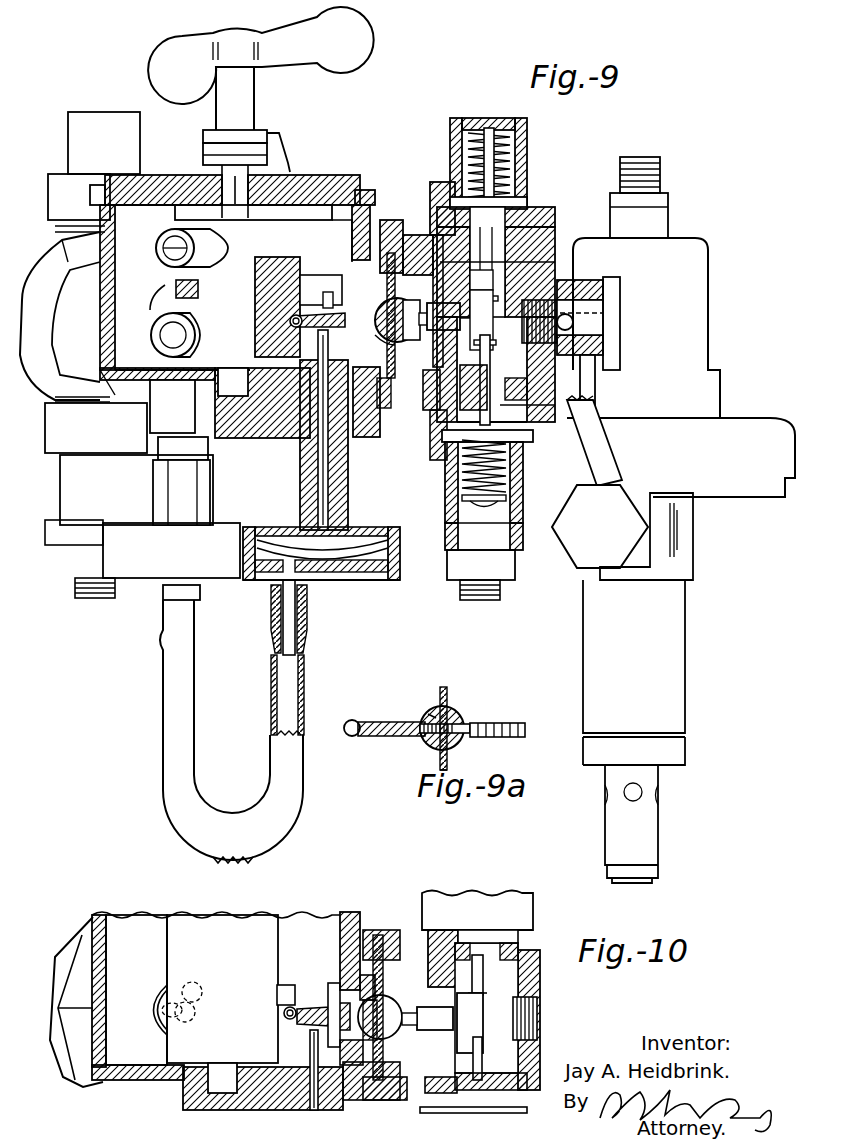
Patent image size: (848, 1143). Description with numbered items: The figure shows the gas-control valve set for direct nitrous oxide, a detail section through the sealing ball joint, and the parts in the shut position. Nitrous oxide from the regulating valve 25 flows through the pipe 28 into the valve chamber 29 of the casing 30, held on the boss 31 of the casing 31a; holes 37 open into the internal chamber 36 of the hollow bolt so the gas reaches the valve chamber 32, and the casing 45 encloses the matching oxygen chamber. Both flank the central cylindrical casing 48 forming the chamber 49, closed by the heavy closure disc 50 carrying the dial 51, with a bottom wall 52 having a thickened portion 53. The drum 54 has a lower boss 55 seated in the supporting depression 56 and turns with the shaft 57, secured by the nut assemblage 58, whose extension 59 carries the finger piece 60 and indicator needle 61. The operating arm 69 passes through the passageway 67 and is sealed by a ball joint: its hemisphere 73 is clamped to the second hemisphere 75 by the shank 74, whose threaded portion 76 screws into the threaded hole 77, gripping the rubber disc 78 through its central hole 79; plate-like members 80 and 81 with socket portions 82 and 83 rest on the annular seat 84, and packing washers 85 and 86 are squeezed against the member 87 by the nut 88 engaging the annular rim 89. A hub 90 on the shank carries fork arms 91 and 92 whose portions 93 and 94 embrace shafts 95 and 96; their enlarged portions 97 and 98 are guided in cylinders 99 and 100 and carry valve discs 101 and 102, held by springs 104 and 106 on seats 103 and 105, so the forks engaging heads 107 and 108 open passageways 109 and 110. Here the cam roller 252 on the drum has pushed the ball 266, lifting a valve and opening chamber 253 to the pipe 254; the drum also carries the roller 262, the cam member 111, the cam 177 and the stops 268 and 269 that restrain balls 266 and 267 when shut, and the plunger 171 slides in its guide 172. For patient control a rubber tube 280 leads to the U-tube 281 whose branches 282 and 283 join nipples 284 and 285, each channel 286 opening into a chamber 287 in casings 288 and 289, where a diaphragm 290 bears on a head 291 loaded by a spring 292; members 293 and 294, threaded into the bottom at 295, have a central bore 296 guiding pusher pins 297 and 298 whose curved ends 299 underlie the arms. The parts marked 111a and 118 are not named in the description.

In FIG. 9, the regulating valve 25 is at (748, 450).
In FIG. 9, the pipe 28 is at (607, 457).
In FIG. 9, the valve chamber 29 is at (605, 300).
In FIG. 9, the casing 30 is at (595, 285).
In FIG. 9, the boss 31 is at (537, 277).
In FIG. 10, the boss 31 is at (540, 1063).
In FIG. 9, the casing 31a is at (450, 238).
In FIG. 10, the casing 31a is at (503, 973).
In FIG. 9, the valve chamber 32 is at (435, 245).
In FIG. 10, the valve chamber 32 is at (435, 977).
In FIG. 9, the internal chamber 36 is at (582, 395).
In FIG. 9, the holes 37 is at (600, 318).
In FIG. 9, the casing 45 is at (110, 390).
In FIG. 9, the cylindrical casing 48 is at (100, 370).
In FIG. 10, the cylindrical casing 48 is at (98, 917).
In FIG. 9, the chamber 49 is at (125, 240).
In FIG. 10, the chamber 49 is at (140, 923).
In FIG. 9, the closure disc 50 is at (118, 185).
In FIG. 9, the dial 51 is at (312, 215).
In FIG. 9, the bottom wall 52 is at (200, 417).
In FIG. 9, the thickened portion 53 is at (200, 425).
In FIG. 9, the drum 54 is at (263, 233).
In FIG. 10, the drum 54 is at (222, 925).
In FIG. 9, the lower boss 55 is at (213, 413).
In FIG. 10, the lower boss 55 is at (217, 1093).
In FIG. 10, the supporting depression 56 is at (200, 1087).
In FIG. 9, the shaft 57 is at (228, 178).
In FIG. 9, the nut assemblage 58 is at (205, 138).
In FIG. 9, the extension 59 is at (250, 97).
In FIG. 9, the operating finger piece 60 is at (362, 34).
In FIG. 9, the indicator needle 61 is at (282, 143).
In FIG. 9, the passageway 67 is at (350, 300).
In FIG. 9, the operating arm 69 is at (345, 318).
In FIG. 9A, the operating arm 69 is at (383, 722).
In FIG. 10, the operating arm 69 is at (317, 1003).
In FIG. 9, the hemisphere 73 is at (365, 292).
In FIG. 9A, the hemisphere 73 is at (423, 743).
In FIG. 9, the shank 74 is at (422, 313).
In FIG. 9A, the shank 74 is at (477, 721).
In FIG. 10, the shank 74 is at (408, 1011).
In FIG. 9, the second hemisphere 75 is at (412, 335).
In FIG. 9A, the second hemisphere 75 is at (460, 720).
In FIG. 9A, the threaded extended portion 76 is at (438, 757).
In FIG. 9A, the threaded hole 77 is at (430, 716).
In FIG. 9, the flexible rubber disc 78 is at (386, 290).
In FIG. 9A, the flexible rubber disc 78 is at (445, 687).
In FIG. 10, the flexible rubber disc 78 is at (381, 935).
In FIG. 9A, the central hole 79 is at (452, 690).
In FIG. 9, the plate-like member 80 is at (407, 300).
In FIG. 10, the plate-like member 80 is at (388, 940).
In FIG. 9, the plate-like member 81 is at (384, 300).
In FIG. 10, the plate-like member 81 is at (375, 935).
In FIG. 9, the socket portion 82 is at (398, 342).
In FIG. 10, the socket portion 82 is at (383, 1042).
In FIG. 9, the socket portion 83 is at (324, 345).
In FIG. 10, the socket portion 83 is at (408, 1032).
In FIG. 9, the annular seat 84 is at (432, 225).
In FIG. 10, the annular seat 84 is at (430, 935).
In FIG. 9, the packing washer 85 is at (437, 423).
In FIG. 10, the packing washer 85 is at (398, 940).
In FIG. 9, the packing washer 86 is at (378, 395).
In FIG. 10, the packing washer 86 is at (367, 937).
In FIG. 9, the member 87 is at (405, 240).
In FIG. 9, the nut 88 is at (100, 275).
In FIG. 10, the nut 88 is at (73, 1032).
In FIG. 9, the annular rim 89 is at (400, 400).
In FIG. 10, the annular rim 89 is at (437, 1095).
In FIG. 9, the hub 90 is at (445, 328).
In FIG. 10, the hub 90 is at (433, 1010).
In FIG. 9, the fork arm 91 is at (462, 340).
In FIG. 9, the fork arm 92 is at (472, 288).
In FIG. 10, the fork arm 92 is at (480, 950).
In FIG. 9, the fork portion 93 is at (472, 300).
In FIG. 10, the fork portion 93 is at (484, 997).
In FIG. 9, the fork portion 94 is at (496, 343).
In FIG. 9, the shaft 95 is at (486, 285).
In FIG. 10, the shaft 95 is at (483, 988).
In FIG. 9, the shaft 96 is at (490, 360).
In FIG. 10, the shaft 96 is at (484, 1050).
In FIG. 9, the enlarged portion 97 is at (510, 230).
In FIG. 10, the enlarged portion 97 is at (485, 957).
In FIG. 9, the enlarged portion 98 is at (520, 400).
In FIG. 10, the enlarged portion 98 is at (483, 1090).
In FIG. 9, the cylinder 99 is at (505, 262).
In FIG. 10, the cylinder 99 is at (527, 952).
In FIG. 9, the cylinder 100 is at (520, 387).
In FIG. 10, the cylinder 100 is at (500, 1068).
In FIG. 9, the valve disc 101 is at (500, 214).
In FIG. 9, the valve disc 102 is at (503, 420).
In FIG. 9, the valve seat 103 is at (518, 185).
In FIG. 9, the spring 104 is at (508, 143).
In FIG. 9, the valve seat 105 is at (437, 433).
In FIG. 9, the spring 106 is at (508, 487).
In FIG. 9, the head 107 is at (522, 316).
In FIG. 10, the head 107 is at (537, 1005).
In FIG. 9, the head 108 is at (522, 326).
In FIG. 10, the head 108 is at (540, 1020).
In FIG. 9, the passageway 109 is at (510, 245).
In FIG. 9, the passageway 110 is at (507, 412).
In FIG. 9, the cam member 111 is at (333, 230).
In FIG. 9, the gasket 111a is at (366, 245).
In FIG. 9, the spring 118 is at (511, 164).
In FIG. 9, the plunger 171 is at (172, 283).
In FIG. 9, the guide 172 is at (170, 293).
In FIG. 9, the cylindrical cam 177 is at (160, 240).
In FIG. 9, the cam roller 252 is at (275, 265).
In FIG. 9, the chamber 253 is at (518, 533).
In FIG. 9, the pipe 254 is at (463, 505).
In FIG. 9, the valve operating roller 262 is at (160, 345).
In FIG. 9, the ball 266 is at (290, 318).
In FIG. 9A, the ball 266 is at (350, 737).
In FIG. 10, the ball 266 is at (282, 1018).
In FIG. 10, the ball 267 is at (200, 1008).
In FIG. 10, the stop 268 is at (285, 987).
In FIG. 10, the stop 269 is at (190, 985).
In FIG. 9, the rubber tube 280 is at (253, 853).
In FIG. 9, the U-tube 281 is at (293, 787).
In FIG. 9, the branch 282 is at (305, 683).
In FIG. 9, the branch 283 is at (192, 717).
In FIG. 9, the nipple 284 is at (305, 610).
In FIG. 9, the nipple 285 is at (177, 587).
In FIG. 9, the channel 286 is at (273, 615).
In FIG. 9, the chamber 287 is at (382, 587).
In FIG. 9, the casing 288 is at (399, 565).
In FIG. 9, the casing 289 is at (145, 573).
In FIG. 9, the diaphragm 290 is at (270, 582).
In FIG. 9, the head 291 is at (320, 580).
In FIG. 9, the spring 292 is at (282, 528).
In FIG. 9, the member 293 is at (300, 480).
In FIG. 9, the member 294 is at (168, 492).
In FIG. 9, the threaded connection 295 is at (240, 440).
In FIG. 10, the threaded connection 295 is at (343, 1102).
In FIG. 9, the central bore 296 is at (347, 482).
In FIG. 10, the central bore 296 is at (313, 1112).
In FIG. 9, the pusher pin 297 is at (317, 460).
In FIG. 10, the pusher pin 298 is at (290, 1062).
In FIG. 9, the curved ends 299 is at (291, 325).
In FIG. 10, the curved ends 299 is at (297, 1027).